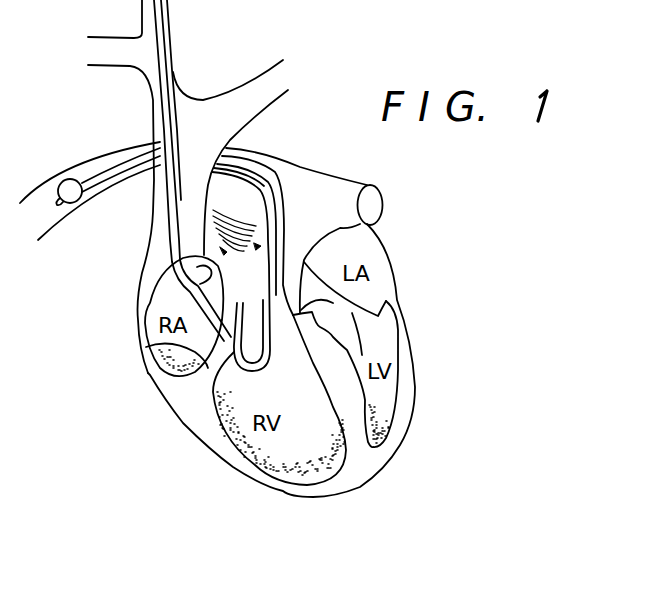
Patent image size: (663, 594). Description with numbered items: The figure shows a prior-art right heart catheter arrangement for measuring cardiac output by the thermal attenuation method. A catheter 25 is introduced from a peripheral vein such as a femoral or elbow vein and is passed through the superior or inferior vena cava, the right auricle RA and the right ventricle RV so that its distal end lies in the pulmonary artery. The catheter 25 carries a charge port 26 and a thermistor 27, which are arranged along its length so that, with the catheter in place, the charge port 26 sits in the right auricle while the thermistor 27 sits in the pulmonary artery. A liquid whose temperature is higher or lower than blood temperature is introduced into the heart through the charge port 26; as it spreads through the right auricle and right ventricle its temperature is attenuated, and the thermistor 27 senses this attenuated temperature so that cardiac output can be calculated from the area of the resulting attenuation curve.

The catheter 25 is at (168, 222).
The charge port 26 is at (150, 300).
The thermistor 27 is at (125, 163).